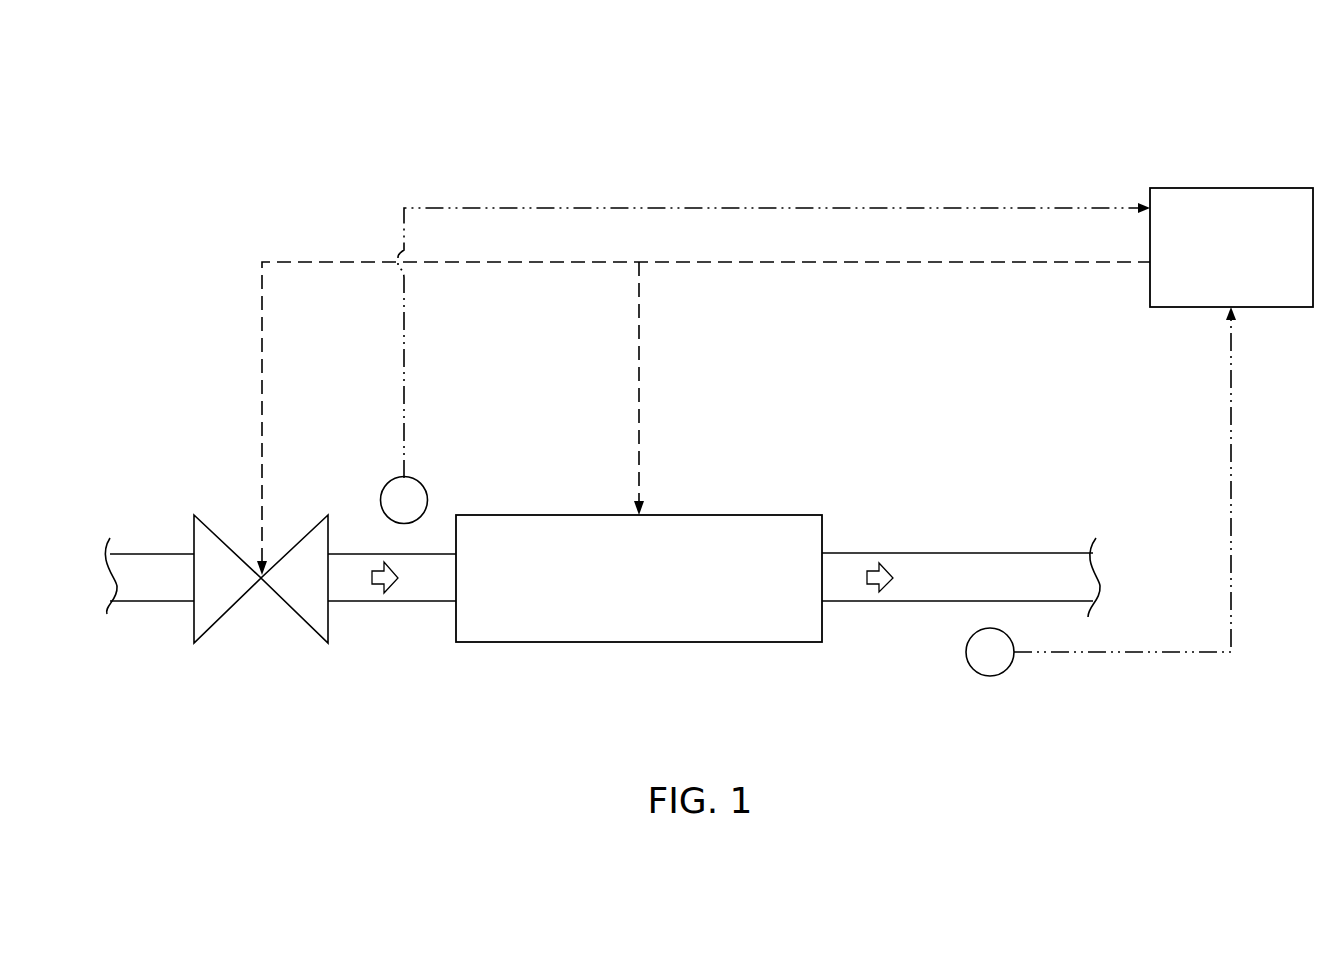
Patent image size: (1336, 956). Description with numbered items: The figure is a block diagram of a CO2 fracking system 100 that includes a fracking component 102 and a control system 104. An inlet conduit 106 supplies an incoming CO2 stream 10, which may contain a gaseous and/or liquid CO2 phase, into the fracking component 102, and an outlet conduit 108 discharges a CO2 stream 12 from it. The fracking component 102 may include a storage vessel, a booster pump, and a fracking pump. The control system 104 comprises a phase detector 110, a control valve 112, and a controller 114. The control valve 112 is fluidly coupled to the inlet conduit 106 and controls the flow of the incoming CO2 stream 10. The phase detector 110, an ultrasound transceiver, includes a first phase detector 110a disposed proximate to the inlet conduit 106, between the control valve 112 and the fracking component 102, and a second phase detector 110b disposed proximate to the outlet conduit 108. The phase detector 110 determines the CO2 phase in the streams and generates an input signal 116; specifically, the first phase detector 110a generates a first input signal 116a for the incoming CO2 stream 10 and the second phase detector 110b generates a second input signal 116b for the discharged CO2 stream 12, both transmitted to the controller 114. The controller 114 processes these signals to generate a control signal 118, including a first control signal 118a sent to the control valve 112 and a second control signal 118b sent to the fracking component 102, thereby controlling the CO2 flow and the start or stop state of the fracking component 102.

The CO2 fracking system 100 is at (709, 402).
The fracking component 102 is at (657, 613).
The control system 104 is at (1231, 207).
The inlet conduit 106 is at (436, 604).
The outlet conduit 108 is at (897, 604).
The incoming CO2 stream 10 is at (380, 590).
The CO2 stream 12 is at (870, 560).
The phase detector 110 is at (699, 578).
The first phase detector 110a is at (428, 500).
The second phase detector 110b is at (988, 677).
The control valve 112 is at (227, 617).
The controller 114 is at (1215, 282).
The input signal 116 is at (772, 476).
The first input signal 116a is at (405, 355).
The second input signal 116b is at (1190, 657).
The control signal 118 is at (703, 418).
The first control signal 118a is at (262, 312).
The second control signal 118b is at (640, 350).